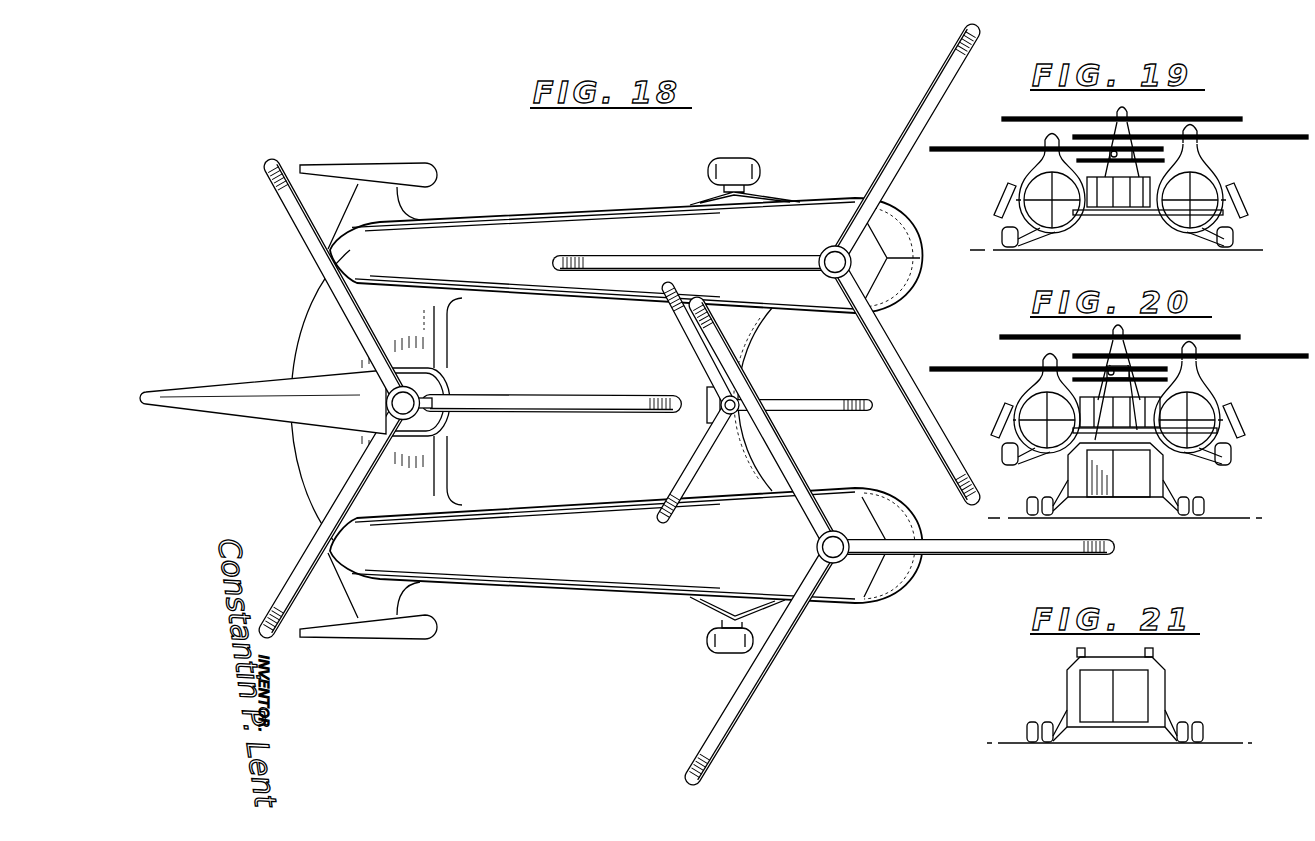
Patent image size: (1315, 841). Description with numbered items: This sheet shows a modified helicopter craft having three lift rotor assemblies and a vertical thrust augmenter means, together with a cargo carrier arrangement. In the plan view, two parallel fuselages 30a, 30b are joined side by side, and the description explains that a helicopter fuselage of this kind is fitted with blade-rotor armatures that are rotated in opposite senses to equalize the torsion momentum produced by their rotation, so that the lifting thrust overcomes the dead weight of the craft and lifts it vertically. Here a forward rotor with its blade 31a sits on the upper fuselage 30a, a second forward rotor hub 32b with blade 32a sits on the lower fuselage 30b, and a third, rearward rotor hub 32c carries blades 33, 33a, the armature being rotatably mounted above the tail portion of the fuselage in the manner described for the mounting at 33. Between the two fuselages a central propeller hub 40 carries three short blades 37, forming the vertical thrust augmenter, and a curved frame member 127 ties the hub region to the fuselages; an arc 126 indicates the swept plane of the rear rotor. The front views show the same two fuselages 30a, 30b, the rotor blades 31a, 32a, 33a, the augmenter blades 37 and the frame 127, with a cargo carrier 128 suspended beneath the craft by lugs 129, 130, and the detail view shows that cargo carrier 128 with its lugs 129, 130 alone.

In FIG. 18, the upper fuselage (hull) 30a is at (532, 212).
In FIG. 19, the upper fuselage (hull) 30a is at (1216, 163).
In FIG. 20, the upper fuselage (hull) 30a is at (1217, 378).
In FIG. 18, the lower fuselage (hull) 30b is at (574, 604).
In FIG. 19, the lower fuselage (hull) 30b is at (1027, 168).
In FIG. 20, the lower fuselage (hull) 30b is at (1026, 388).
In FIG. 18, the rotor hub and blades of upper fuselage 31a is at (903, 121).
In FIG. 19, the rotor hub and blades of upper fuselage 31a is at (1261, 133).
In FIG. 20, the rotor hub and blades of upper fuselage 31a is at (1248, 353).
In FIG. 18, the rotor blade of lower fuselage 32a is at (971, 558).
In FIG. 19, the rotor blade of lower fuselage 32a is at (977, 145).
In FIG. 20, the rotor blade of lower fuselage 32a is at (960, 366).
In FIG. 18, the rotor hub of lower fuselage 32b is at (898, 541).
In FIG. 18, the rear rotor hub 32c is at (406, 398).
In FIG. 18, the rotatable mounting point of the armature 33 is at (253, 386).
In FIG. 18, the rear rotor blade 33a is at (303, 246).
In FIG. 19, the rear rotor blade 33a is at (1209, 116).
In FIG. 20, the rear rotor blade 33a is at (1163, 336).
In FIG. 18, the propeller blades 37 is at (686, 335).
In FIG. 19, the propeller blades 37 is at (1084, 158).
In FIG. 20, the propeller blades 37 is at (1073, 378).
In FIG. 18, the central propeller hub 40 is at (745, 403).
In FIG. 18, the rotor disc plane 126 is at (302, 470).
In FIG. 18, the connecting ring / frame 127 is at (752, 452).
In FIG. 19, the connecting ring / frame 127 is at (1148, 218).
In FIG. 20, the connecting ring / frame 127 is at (1095, 436).
In FIG. 21, the cargo container 128 is at (1065, 681).
In FIG. 20, the container attachment lug 129 is at (1170, 478).
In FIG. 21, the container attachment lug 129 is at (1154, 651).
In FIG. 21, the container attachment lug 130 is at (1076, 651).